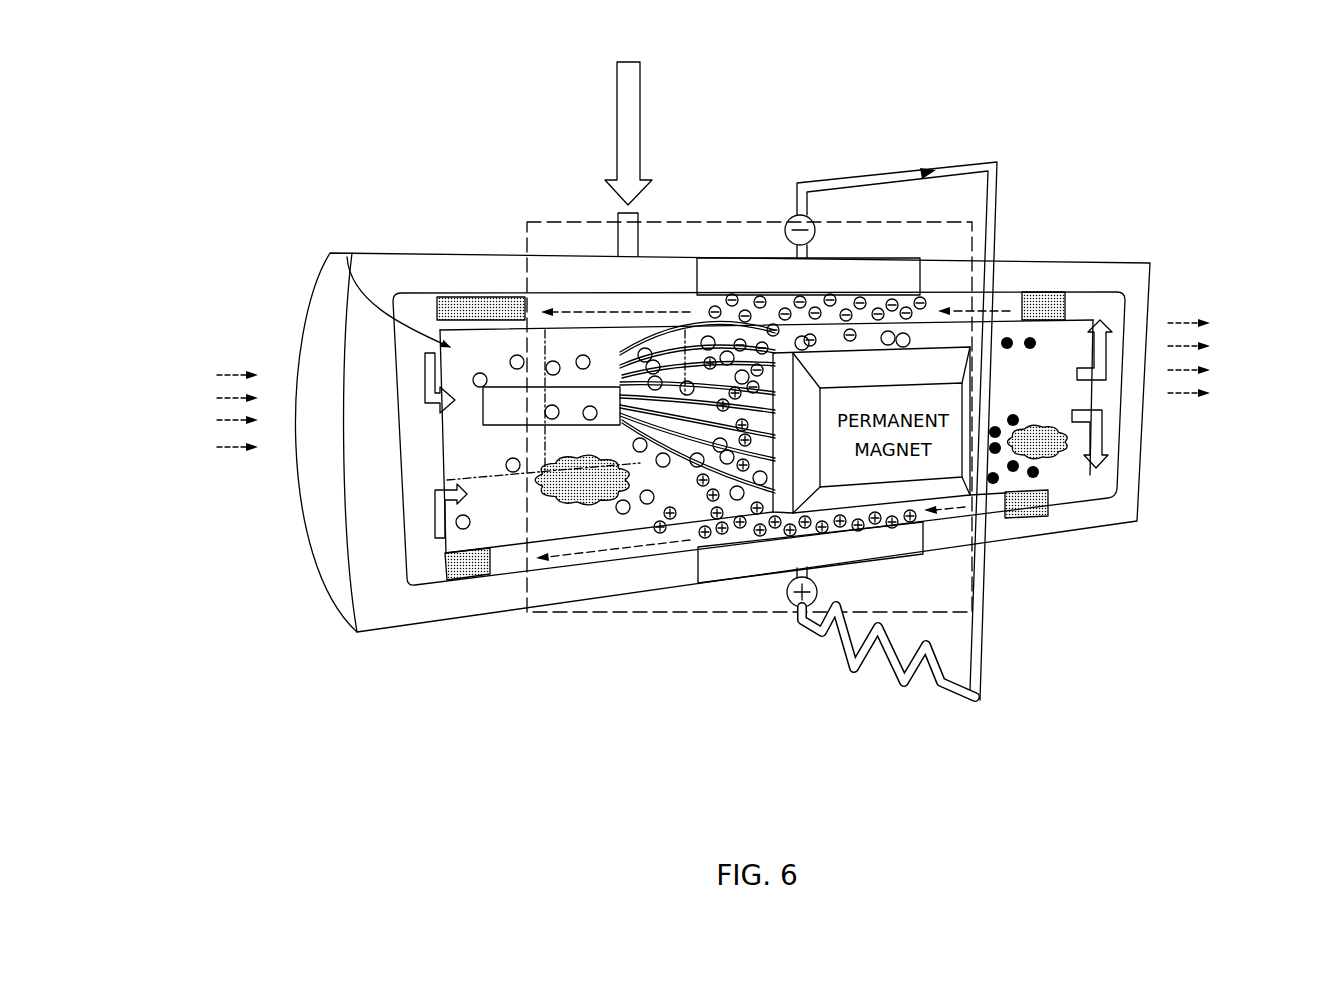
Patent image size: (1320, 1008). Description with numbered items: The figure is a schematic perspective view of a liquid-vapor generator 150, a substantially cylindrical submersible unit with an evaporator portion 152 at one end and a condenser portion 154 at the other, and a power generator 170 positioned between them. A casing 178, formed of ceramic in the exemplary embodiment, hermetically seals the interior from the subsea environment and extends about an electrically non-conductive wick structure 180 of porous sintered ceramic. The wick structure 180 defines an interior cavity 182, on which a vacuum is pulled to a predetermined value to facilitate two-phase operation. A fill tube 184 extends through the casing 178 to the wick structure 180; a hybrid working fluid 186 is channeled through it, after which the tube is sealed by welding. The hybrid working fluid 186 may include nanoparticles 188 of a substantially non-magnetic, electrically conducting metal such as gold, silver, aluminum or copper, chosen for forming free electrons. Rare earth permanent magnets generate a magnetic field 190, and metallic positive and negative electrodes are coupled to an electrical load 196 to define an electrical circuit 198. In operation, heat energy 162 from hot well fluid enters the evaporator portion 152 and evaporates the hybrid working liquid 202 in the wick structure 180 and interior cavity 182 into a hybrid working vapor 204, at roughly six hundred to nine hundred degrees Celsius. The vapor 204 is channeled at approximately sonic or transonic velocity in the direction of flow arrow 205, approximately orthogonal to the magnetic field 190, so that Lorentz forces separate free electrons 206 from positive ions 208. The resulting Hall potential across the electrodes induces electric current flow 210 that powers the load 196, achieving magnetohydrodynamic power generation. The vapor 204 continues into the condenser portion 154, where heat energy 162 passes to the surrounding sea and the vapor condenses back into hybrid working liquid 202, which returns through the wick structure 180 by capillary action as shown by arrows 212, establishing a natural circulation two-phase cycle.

The liquid-vapor generator 150 is at (758, 147).
The evaporator portion 152 is at (246, 313).
The condenser portion 154 is at (1200, 294).
The heat energy 162 is at (201, 441).
The power generator 170 is at (714, 208).
The casing 178 is at (1090, 281).
The wick structure 180 is at (407, 300).
The interior cavity 182 is at (476, 509).
The fill tube 184 is at (618, 217).
The hybrid working fluid 186 is at (622, 82).
The nanoparticles 188 is at (445, 297).
The magnetic field 190 is at (668, 363).
The electrical load 196 is at (905, 677).
The electrical circuit 198 is at (950, 711).
The hybrid working liquid 202 is at (426, 377).
The hybrid working vapor 204 is at (349, 253).
The flow arrow 205 is at (540, 392).
The free electrons 206 is at (925, 306).
The positive ions 208 is at (687, 536).
The electric current flow 210 is at (890, 178).
The arrows 212 is at (582, 310).